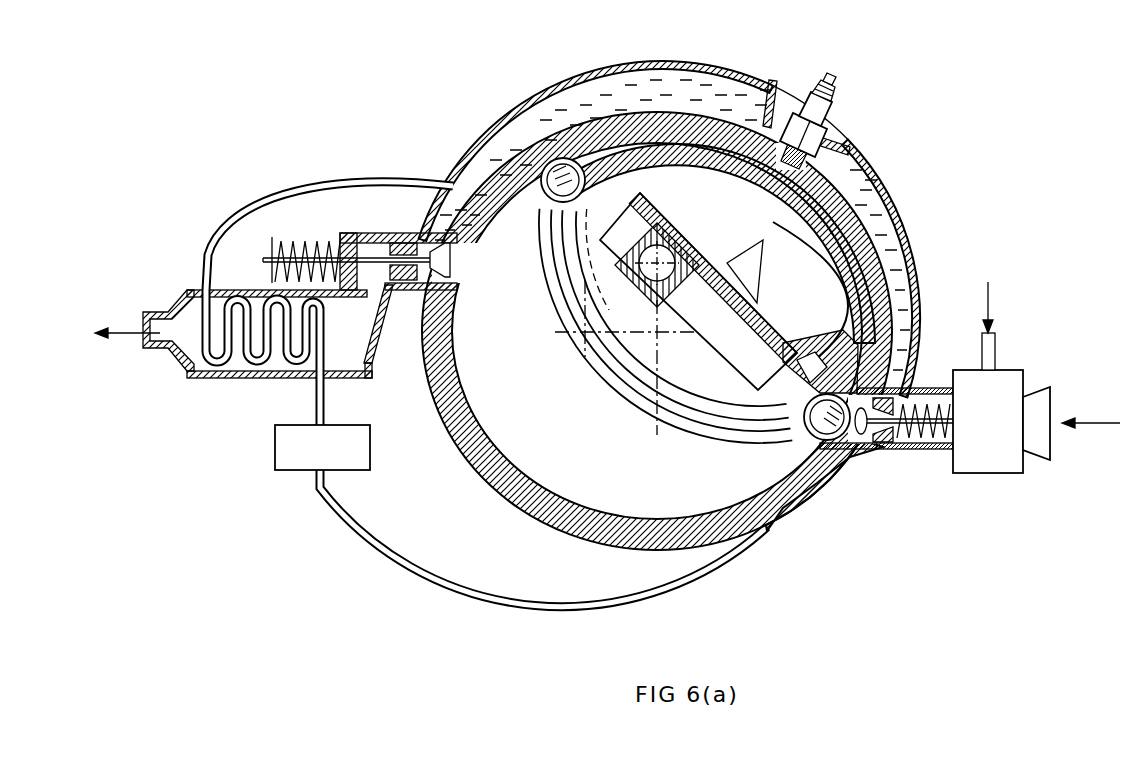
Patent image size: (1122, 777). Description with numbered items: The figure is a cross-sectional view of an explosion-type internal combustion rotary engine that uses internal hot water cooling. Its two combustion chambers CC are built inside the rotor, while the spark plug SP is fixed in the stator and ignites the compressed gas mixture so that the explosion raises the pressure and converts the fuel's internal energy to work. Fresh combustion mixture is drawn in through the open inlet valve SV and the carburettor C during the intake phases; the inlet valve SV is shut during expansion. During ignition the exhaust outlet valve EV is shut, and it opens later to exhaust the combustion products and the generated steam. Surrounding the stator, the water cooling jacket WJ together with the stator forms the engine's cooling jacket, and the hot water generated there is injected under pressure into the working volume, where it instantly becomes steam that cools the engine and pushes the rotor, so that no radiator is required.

The water cooling jacket WJ is at (653, 82).
The spark plug SP is at (811, 108).
The exhaust outlet valve EV is at (263, 260).
The inlet valve SV is at (863, 432).
The combustion chambers CC is at (690, 293).
The carburettor C is at (1036, 377).